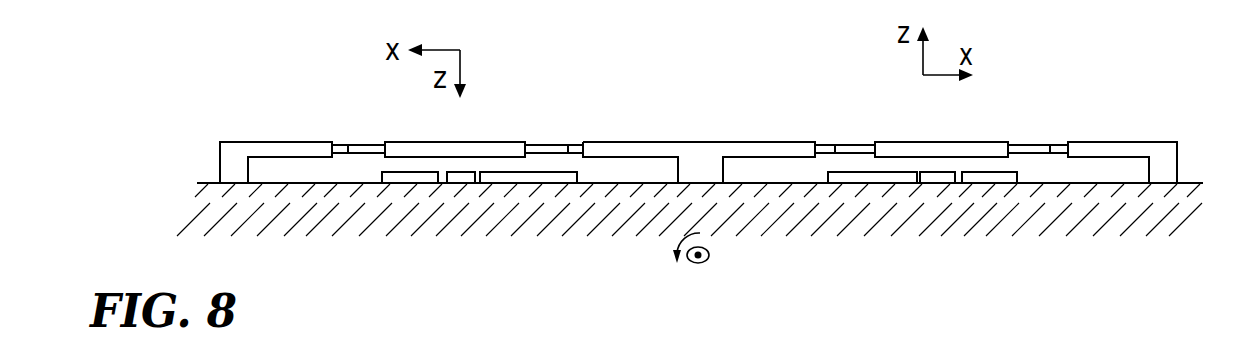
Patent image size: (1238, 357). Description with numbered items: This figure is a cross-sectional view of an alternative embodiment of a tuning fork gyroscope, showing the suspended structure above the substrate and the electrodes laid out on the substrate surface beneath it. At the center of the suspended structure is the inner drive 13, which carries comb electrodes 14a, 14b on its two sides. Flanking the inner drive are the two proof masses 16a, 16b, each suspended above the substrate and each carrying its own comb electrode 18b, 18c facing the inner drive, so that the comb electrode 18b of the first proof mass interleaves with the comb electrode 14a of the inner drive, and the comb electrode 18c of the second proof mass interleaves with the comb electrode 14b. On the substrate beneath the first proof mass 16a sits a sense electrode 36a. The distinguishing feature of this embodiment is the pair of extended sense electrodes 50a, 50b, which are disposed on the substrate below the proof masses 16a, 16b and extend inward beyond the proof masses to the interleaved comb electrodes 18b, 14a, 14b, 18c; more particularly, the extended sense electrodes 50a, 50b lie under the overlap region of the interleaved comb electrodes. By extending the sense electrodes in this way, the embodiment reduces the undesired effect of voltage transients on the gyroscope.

The inner drive 13 is at (692, 142).
The comb electrode 14a is at (575, 144).
The comb electrode 14b is at (823, 144).
The proof mass 16a is at (415, 142).
The proof mass 16b is at (935, 150).
The comb electrode 18b is at (538, 144).
The comb electrode 18c is at (857, 144).
The sense electrode 36a is at (405, 184).
The extended sense electrode 50a is at (518, 184).
The extended sense electrode 50b is at (862, 184).